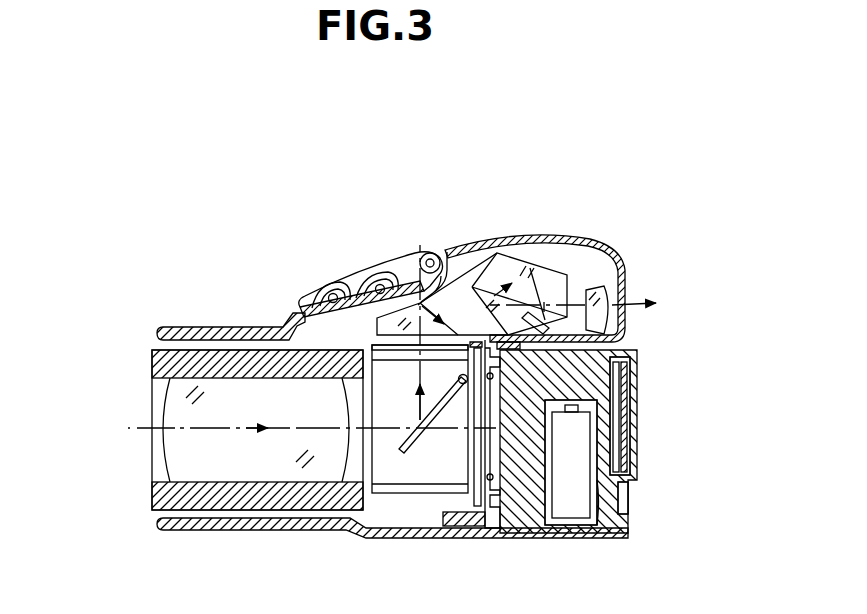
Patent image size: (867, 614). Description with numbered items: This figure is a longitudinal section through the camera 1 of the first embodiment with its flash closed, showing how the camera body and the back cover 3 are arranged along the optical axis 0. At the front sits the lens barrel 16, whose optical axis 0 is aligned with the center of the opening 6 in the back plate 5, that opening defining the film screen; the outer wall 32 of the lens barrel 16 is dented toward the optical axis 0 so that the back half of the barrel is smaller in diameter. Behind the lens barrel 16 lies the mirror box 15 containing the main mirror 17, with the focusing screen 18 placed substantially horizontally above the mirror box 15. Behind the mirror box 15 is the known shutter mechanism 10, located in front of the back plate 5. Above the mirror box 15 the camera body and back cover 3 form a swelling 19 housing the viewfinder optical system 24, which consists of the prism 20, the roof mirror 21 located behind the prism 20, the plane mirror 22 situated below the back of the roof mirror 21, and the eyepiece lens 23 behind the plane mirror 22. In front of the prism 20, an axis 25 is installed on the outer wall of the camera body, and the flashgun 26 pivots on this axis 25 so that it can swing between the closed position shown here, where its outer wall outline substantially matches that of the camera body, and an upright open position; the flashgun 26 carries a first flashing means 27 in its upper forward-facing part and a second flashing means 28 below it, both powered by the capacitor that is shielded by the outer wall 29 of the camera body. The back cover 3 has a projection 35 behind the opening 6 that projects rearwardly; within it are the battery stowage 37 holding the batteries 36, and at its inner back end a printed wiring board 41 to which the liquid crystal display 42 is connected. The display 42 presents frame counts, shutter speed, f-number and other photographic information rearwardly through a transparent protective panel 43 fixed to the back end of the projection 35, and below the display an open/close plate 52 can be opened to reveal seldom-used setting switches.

The camera 1 is at (224, 276).
The back cover 3 is at (648, 507).
The back plate 5 is at (472, 522).
The opening 6 is at (457, 473).
The shutter mechanism 10 is at (445, 526).
The mirror box 15 is at (372, 528).
The lens barrel 16 is at (152, 372).
The main mirror 17 is at (400, 470).
The focusing screen 18 is at (386, 350).
The swelling 19 is at (624, 266).
The prism 20 is at (465, 292).
The roof mirror 21 is at (527, 290).
The plane mirror 22 is at (560, 300).
The eyepiece lens 23 is at (600, 290).
The viewfinder optical system 24 is at (480, 136).
The axis 25 is at (427, 265).
The flashgun 26 is at (344, 292).
The first flashing means 27 is at (306, 302).
The second flashing means 28 is at (371, 292).
The outer wall 29 is at (456, 270).
The outer wall 32 is at (196, 327).
The projection 35 is at (618, 520).
The batteries 36 is at (585, 522).
The battery stowage 37 is at (560, 526).
The printed wiring board 41 is at (628, 376).
The liquid crystal display 42 is at (628, 408).
The transparent protective panel 43 is at (630, 444).
The open/close plate 52 is at (630, 498).
The optical axis 0 is at (308, 410).